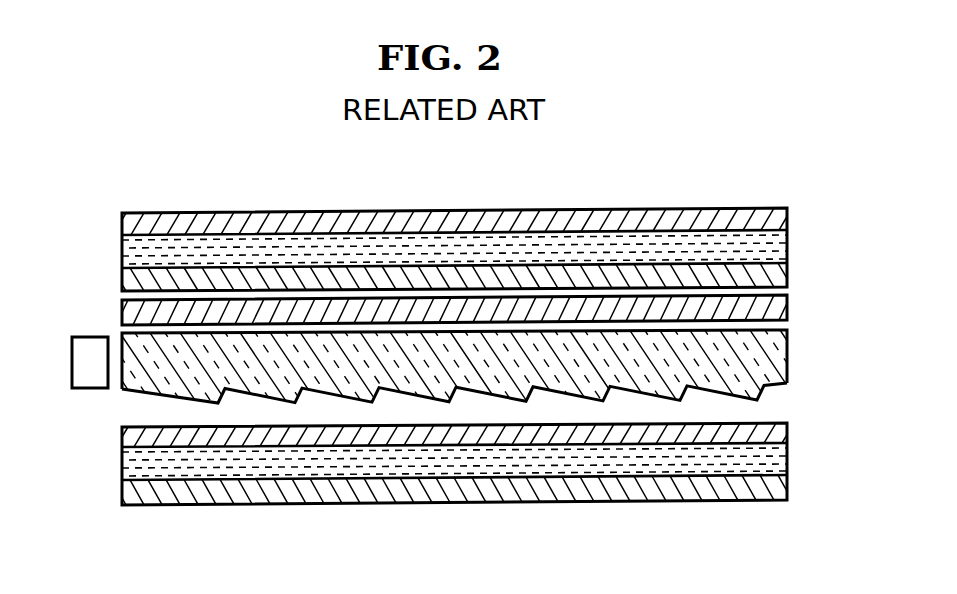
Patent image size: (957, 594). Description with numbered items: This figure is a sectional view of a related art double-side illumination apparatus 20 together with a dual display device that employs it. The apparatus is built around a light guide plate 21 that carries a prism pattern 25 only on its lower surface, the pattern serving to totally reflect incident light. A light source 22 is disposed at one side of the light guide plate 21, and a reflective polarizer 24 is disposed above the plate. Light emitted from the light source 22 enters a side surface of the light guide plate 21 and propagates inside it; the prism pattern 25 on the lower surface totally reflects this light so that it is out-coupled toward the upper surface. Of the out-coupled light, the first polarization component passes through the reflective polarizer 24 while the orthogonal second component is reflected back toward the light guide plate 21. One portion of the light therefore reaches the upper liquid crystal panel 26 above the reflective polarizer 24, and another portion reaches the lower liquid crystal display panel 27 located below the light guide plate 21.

The double-side illumination apparatus 20 is at (612, 556).
The light guide plate 21 is at (783, 354).
The light source 22 is at (78, 366).
The reflective polarizer 24 is at (783, 307).
The prism pattern 25 is at (735, 396).
The upper liquid crystal panel 26 is at (112, 215).
The lower liquid crystal display panel 27 is at (112, 430).